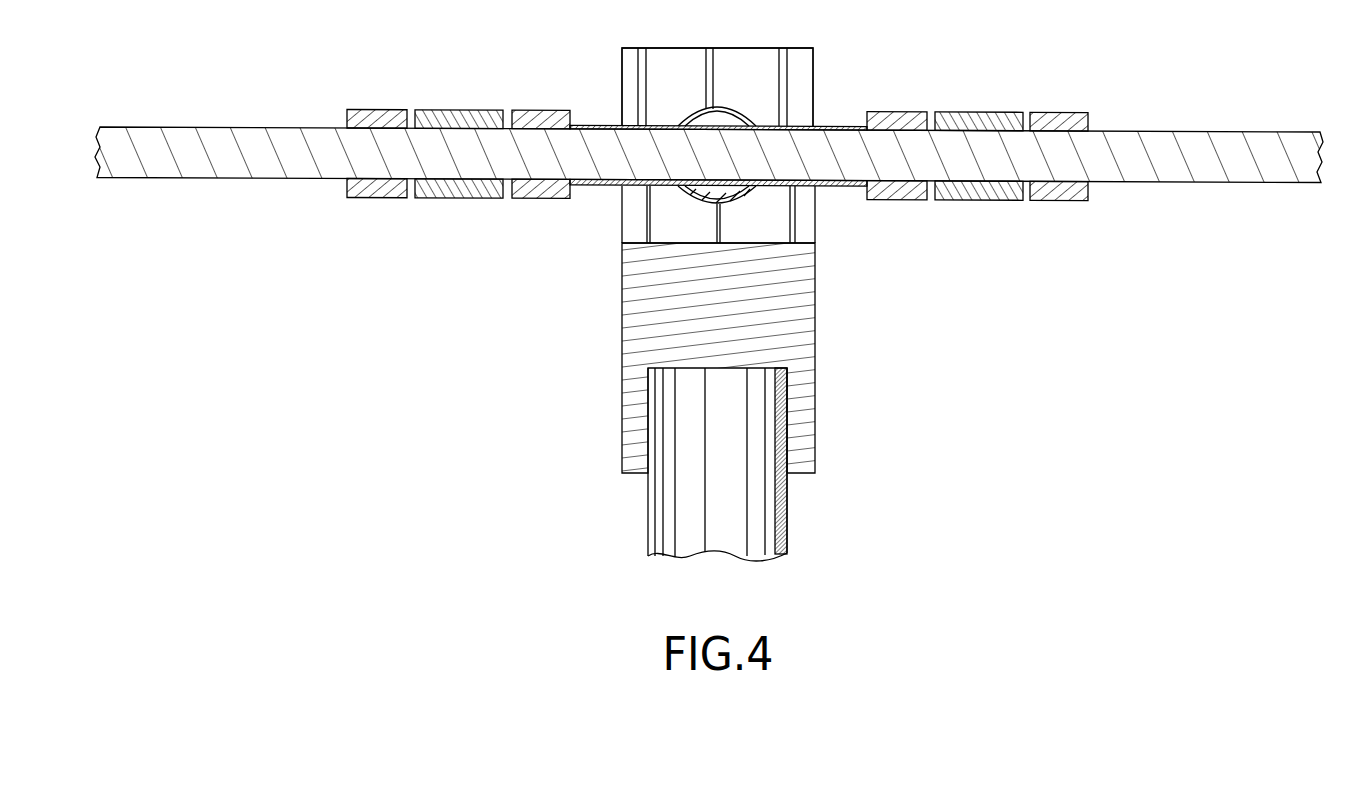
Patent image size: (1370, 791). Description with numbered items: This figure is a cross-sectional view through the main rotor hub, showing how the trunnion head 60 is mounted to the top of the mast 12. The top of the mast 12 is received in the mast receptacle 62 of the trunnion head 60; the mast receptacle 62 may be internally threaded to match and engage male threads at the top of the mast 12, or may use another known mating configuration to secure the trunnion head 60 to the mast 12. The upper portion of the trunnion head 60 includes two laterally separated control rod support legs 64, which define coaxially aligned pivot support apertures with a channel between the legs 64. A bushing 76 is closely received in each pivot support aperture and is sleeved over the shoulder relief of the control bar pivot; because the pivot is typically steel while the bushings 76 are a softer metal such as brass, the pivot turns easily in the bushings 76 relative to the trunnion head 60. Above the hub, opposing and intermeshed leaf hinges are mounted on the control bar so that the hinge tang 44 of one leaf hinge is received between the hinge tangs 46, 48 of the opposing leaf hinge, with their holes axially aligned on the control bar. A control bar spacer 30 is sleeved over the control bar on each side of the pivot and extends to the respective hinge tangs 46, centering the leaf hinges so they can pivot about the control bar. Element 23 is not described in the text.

The mast 12 is at (788, 538).
The panel 23 is at (1243, 132).
The control bar spacer 30 is at (602, 125).
The hinge tang 44 is at (445, 110).
The hinge tang 46 is at (550, 198).
The hinge tang 48 is at (377, 197).
The trunnion head 60 is at (815, 64).
The mast receptacle 62 is at (778, 424).
The control rod support legs 64 is at (663, 47).
The bushing 76 is at (737, 104).